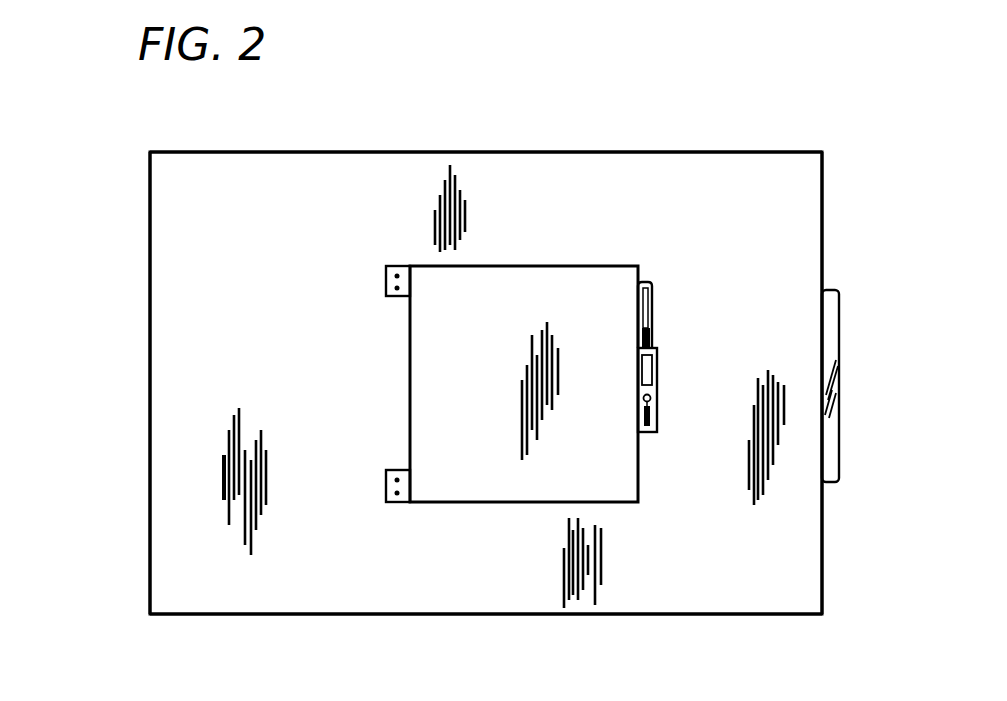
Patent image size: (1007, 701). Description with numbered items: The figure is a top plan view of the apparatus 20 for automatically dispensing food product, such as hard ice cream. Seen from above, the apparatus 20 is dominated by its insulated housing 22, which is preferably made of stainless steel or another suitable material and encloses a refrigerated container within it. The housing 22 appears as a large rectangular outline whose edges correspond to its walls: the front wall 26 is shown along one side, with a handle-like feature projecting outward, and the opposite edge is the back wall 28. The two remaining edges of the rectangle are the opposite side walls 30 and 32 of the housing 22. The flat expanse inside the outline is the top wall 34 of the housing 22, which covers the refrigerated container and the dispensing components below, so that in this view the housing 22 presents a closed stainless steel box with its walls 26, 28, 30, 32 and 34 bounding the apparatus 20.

The apparatus 20 is at (652, 126).
The insulated housing 22 is at (283, 616).
The front wall 26 is at (822, 207).
The back wall 28 is at (150, 384).
The side wall 30 is at (433, 616).
The side wall 32 is at (445, 152).
The top wall 34 is at (269, 320).